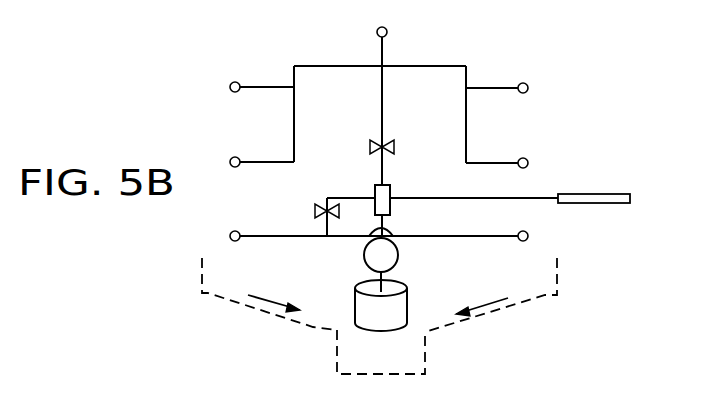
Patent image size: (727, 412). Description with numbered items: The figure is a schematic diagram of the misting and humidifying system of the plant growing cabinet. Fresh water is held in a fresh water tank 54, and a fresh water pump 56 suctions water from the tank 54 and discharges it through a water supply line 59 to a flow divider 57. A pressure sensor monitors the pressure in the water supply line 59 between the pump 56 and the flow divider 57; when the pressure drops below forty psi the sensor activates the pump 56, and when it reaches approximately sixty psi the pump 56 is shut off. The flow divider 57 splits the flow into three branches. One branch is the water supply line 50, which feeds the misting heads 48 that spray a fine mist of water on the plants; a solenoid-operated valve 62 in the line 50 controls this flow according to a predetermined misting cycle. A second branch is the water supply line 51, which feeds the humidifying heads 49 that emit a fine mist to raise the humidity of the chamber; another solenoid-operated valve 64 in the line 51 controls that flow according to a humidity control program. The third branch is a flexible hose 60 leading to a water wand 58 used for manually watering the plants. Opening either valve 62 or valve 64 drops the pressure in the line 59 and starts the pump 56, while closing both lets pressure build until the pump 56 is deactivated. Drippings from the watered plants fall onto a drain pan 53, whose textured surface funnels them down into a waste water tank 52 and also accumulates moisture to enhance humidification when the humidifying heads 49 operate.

The misting heads 48 is at (387, 29).
The humidifying heads 49 is at (230, 233).
The water supply line 50 is at (343, 67).
The water supply line 51 is at (258, 238).
The waste water tank 52 is at (412, 358).
The drain pan 53 is at (207, 295).
The fresh water tank 54 is at (404, 303).
The fresh water pump 56 is at (365, 253).
The flow divider 57 is at (390, 207).
The water wand 58 is at (588, 197).
The water supply line 59 is at (383, 221).
The flexible hose 60 is at (425, 198).
The solenoid-operated valve 62 is at (395, 148).
The solenoid-operated valve 64 is at (315, 208).